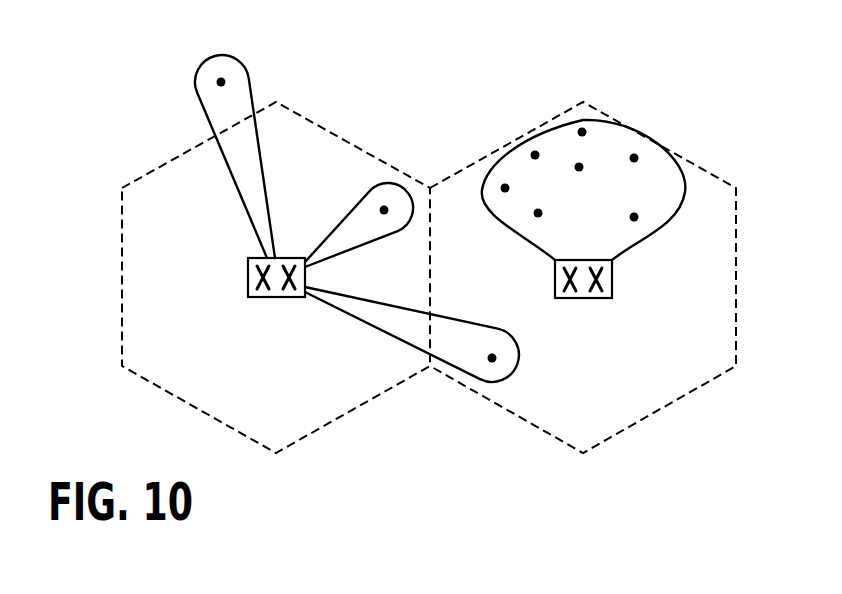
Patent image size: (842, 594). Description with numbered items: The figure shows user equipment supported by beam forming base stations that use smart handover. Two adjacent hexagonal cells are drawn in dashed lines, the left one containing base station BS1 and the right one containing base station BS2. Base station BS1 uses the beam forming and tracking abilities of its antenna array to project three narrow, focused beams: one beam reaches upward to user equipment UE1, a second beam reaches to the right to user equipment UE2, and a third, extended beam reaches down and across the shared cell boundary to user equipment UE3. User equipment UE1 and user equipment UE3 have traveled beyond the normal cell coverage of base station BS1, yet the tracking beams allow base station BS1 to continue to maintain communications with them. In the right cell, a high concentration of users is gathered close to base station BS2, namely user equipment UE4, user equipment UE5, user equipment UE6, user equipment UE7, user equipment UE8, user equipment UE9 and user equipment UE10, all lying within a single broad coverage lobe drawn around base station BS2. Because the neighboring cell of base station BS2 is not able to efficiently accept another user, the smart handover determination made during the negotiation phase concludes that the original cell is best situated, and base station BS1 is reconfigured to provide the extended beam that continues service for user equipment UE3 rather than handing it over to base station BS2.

The base station BS1 is at (357, 218).
The base station BS2 is at (584, 230).
The user equipment UE1 is at (221, 82).
The user equipment UE2 is at (384, 210).
The user equipment UE3 is at (492, 358).
The user equipment UE4 is at (579, 167).
The user equipment UE5 is at (505, 188).
The user equipment UE6 is at (535, 155).
The user equipment UE7 is at (582, 132).
The user equipment UE8 is at (634, 158).
The user equipment UE9 is at (538, 213).
The user equipment UE10 is at (634, 217).